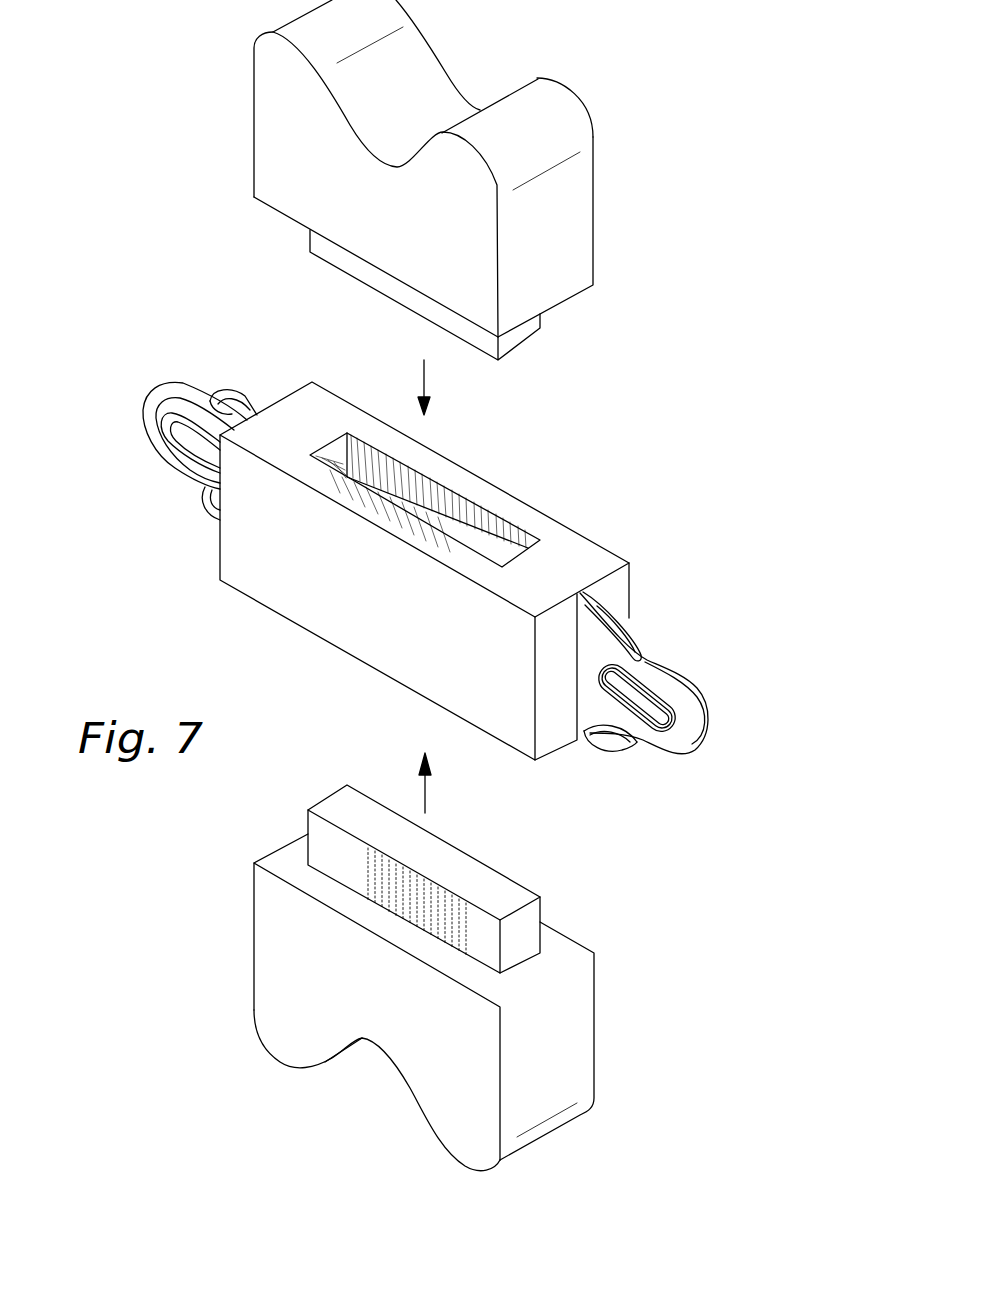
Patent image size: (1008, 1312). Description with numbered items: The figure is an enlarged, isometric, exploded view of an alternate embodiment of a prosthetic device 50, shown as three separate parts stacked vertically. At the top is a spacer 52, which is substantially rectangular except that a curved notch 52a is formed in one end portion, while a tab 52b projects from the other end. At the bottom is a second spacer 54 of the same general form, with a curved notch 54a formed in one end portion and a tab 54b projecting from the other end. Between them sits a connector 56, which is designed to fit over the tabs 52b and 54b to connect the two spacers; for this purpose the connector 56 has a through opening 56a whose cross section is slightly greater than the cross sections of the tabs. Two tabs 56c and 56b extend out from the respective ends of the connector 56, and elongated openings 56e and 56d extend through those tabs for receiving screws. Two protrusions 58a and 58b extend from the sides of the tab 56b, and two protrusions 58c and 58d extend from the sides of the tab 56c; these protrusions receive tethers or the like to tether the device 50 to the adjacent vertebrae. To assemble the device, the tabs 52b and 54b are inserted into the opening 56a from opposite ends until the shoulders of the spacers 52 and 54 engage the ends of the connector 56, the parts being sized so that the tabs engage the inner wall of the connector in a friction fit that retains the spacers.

The prosthetic device 50 is at (714, 447).
The spacer 52 is at (606, 211).
The curved notch 52a is at (431, 44).
The tab 52b is at (520, 348).
The spacer 54 is at (603, 1071).
The curved notch 54a is at (340, 1055).
The tab 54b is at (338, 805).
The connector 56 is at (640, 582).
The through opening 56a is at (368, 458).
The tab 56b is at (706, 722).
The tab 56c is at (140, 422).
The elongated opening 56d is at (662, 703).
The elongated opening 56e is at (190, 433).
The protrusion 58a is at (610, 750).
The protrusion 58b is at (638, 637).
The protrusion 58c is at (210, 508).
The protrusion 58d is at (247, 393).